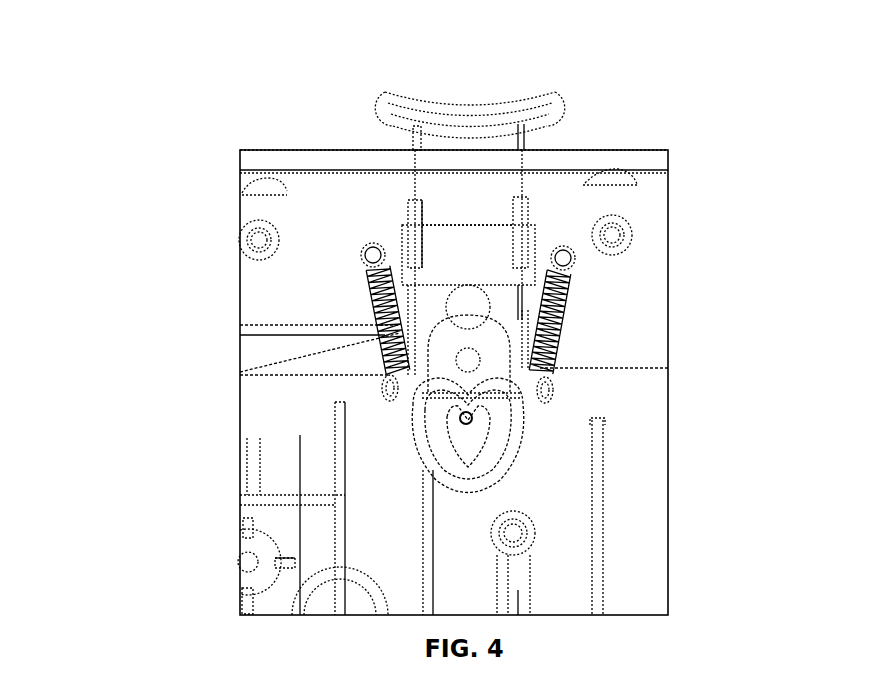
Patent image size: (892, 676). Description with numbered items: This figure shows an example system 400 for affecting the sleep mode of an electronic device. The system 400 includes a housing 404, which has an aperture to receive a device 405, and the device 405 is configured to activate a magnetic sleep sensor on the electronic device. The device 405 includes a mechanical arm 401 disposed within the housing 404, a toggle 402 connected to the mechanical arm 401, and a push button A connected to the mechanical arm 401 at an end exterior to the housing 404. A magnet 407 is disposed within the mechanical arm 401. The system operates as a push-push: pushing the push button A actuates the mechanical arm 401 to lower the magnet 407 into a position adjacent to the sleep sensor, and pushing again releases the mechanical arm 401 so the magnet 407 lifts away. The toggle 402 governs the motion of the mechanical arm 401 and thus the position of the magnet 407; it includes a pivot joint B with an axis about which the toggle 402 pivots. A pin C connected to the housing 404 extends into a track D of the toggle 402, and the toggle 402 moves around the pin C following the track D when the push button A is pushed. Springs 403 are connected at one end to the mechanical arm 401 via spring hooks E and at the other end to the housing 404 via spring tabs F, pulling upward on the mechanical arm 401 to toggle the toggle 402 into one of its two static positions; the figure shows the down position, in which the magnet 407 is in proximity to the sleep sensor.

The system 400 is at (158, 89).
The housing 404 is at (328, 215).
The device 405 is at (578, 102).
The push button A is at (480, 98).
The magnet 407 is at (472, 305).
The pivot joint B is at (454, 360).
The spring tabs F is at (366, 248).
The spring hooks E is at (384, 387).
The mechanical arm 401 is at (504, 303).
The springs 403 is at (558, 330).
The toggle 402 is at (520, 462).
The track D is at (433, 446).
The pin C is at (474, 420).